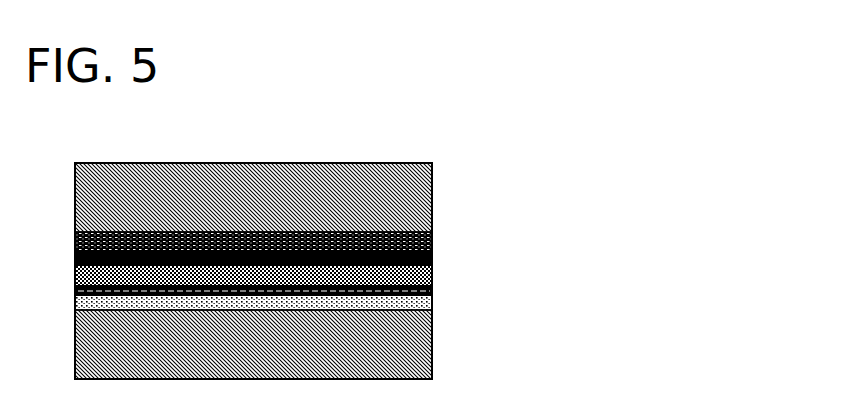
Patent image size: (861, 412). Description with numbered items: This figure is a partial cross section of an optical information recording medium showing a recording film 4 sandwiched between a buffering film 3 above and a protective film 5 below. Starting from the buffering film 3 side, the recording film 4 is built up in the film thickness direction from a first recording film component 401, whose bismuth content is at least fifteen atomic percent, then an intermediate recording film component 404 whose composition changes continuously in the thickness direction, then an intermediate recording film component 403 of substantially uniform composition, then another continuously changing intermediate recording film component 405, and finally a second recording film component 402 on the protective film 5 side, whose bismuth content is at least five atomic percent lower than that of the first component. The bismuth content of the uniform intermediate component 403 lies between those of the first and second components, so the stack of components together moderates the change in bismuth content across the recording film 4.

The buffering film 3 is at (410, 203).
The recording film 4 is at (452, 270).
The first recording film component 401 is at (432, 232).
The second recording film component 402 is at (432, 302).
The intermediate recording film component 403 is at (432, 270).
The intermediate recording film component 404 is at (432, 255).
The intermediate recording film component 405 is at (432, 287).
The protective film 5 is at (415, 353).